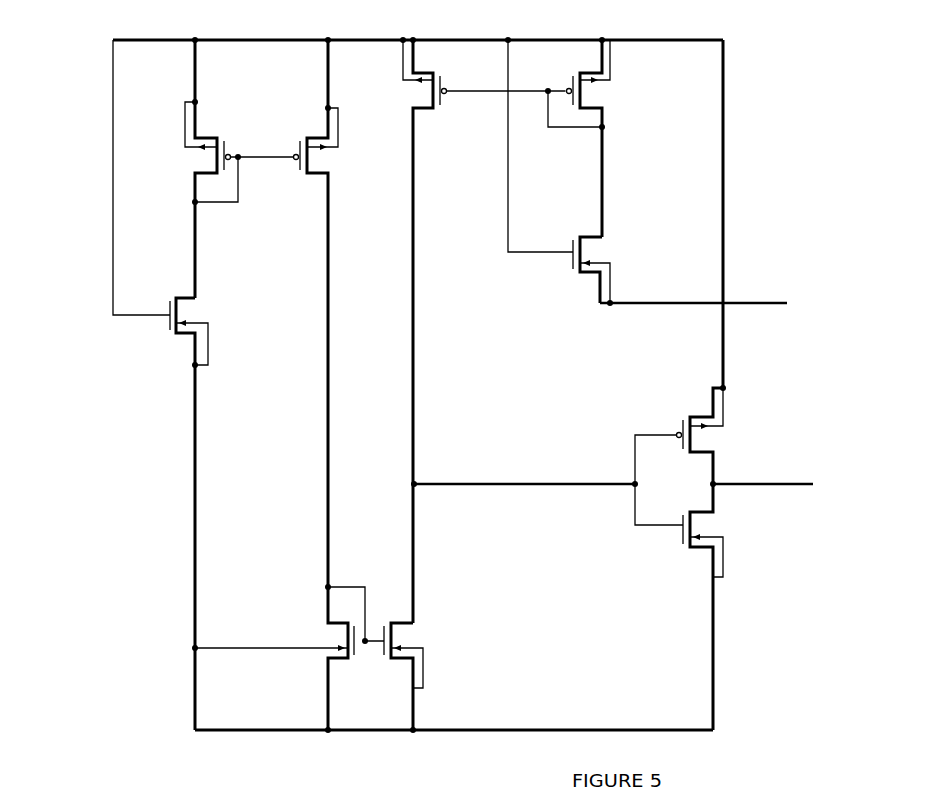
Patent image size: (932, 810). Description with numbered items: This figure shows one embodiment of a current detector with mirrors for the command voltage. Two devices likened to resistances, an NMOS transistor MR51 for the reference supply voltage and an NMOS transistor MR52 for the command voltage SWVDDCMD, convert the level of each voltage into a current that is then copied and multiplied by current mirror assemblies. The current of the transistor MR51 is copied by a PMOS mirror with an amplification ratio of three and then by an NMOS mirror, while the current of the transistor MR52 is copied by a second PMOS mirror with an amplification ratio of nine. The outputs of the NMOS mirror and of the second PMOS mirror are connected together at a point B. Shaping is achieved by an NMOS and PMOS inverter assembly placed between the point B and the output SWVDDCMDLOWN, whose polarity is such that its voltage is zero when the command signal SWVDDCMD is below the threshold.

The NMOS transistor MR51 is at (158, 385).
The NMOS transistor MR52 is at (596, 171).
The command voltage SWVDDCMD is at (725, 292).
The output signal SWVDDCMDLOWN is at (814, 475).
The point B is at (524, 473).